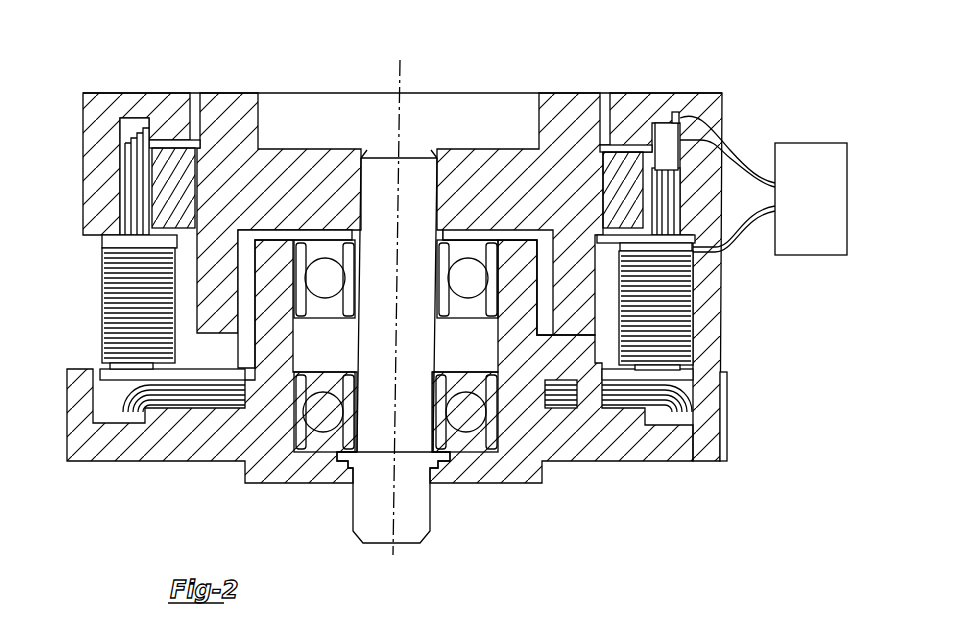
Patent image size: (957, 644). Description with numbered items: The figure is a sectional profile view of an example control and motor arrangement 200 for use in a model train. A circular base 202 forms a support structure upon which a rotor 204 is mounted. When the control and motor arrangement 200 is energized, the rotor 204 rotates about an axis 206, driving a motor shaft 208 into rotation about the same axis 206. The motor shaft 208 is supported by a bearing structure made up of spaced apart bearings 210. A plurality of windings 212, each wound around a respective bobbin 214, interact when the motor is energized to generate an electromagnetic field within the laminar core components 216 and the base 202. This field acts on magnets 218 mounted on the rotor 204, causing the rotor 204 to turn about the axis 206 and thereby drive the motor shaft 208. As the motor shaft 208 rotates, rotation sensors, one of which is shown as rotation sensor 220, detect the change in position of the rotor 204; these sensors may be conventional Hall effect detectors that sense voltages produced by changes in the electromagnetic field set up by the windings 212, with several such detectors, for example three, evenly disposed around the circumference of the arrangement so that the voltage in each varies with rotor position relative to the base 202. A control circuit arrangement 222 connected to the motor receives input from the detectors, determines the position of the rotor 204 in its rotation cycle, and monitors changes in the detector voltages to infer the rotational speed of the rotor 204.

The control and motor arrangement 200 is at (694, 76).
The circular base 202 is at (187, 440).
The rotor 204 is at (318, 158).
The axis 206 is at (402, 80).
The motor shaft 208 is at (440, 150).
The bearings 210 is at (332, 382).
The windings 212 is at (140, 299).
The bobbins 214 is at (667, 243).
The laminar core components 216 is at (127, 397).
The magnets 218 is at (176, 163).
The rotation sensor 220 is at (670, 140).
The control circuit arrangement 222 is at (797, 152).